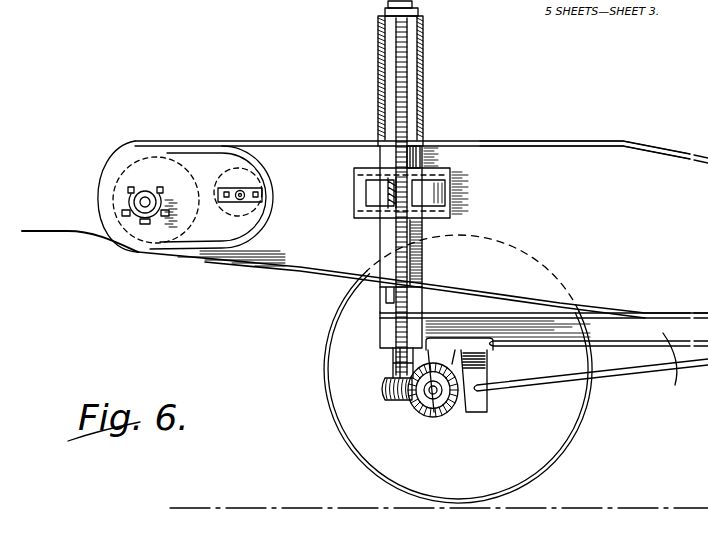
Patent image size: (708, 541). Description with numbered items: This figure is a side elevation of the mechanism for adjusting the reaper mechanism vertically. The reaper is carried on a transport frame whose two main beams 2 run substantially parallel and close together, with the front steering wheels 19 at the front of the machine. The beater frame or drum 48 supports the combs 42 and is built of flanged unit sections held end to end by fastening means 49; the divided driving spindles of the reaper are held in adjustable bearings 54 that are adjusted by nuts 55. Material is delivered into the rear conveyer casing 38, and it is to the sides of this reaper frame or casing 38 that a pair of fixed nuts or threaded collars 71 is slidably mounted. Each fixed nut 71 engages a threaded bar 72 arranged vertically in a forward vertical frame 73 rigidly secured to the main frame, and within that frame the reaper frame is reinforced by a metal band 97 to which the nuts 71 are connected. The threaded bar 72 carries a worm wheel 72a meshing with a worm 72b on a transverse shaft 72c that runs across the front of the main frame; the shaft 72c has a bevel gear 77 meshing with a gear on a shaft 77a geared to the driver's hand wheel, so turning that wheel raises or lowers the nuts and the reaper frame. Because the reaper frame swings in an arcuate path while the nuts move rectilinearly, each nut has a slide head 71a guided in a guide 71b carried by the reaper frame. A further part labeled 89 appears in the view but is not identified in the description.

The main beams 2 is at (544, 360).
The front steering wheels 19 is at (327, 338).
The rear conveyer casing 38 is at (585, 190).
The combs 42 is at (42, 233).
The beater frame or drum 48 is at (183, 187).
The fastening means 49 is at (145, 221).
The adjustable bearing 54 is at (133, 201).
The nuts 55 is at (160, 189).
The fixed nuts or threaded collars 71 is at (438, 186).
The slide head 71a is at (455, 180).
The guide 71b is at (363, 197).
The threaded bar 72 is at (406, 104).
The worm wheel 72a is at (382, 398).
The worm 72b is at (443, 412).
The transverse shaft 72c is at (420, 408).
The forward vertical frame 73 is at (418, 82).
The bevel gear 77 is at (448, 412).
The shaft 77a is at (604, 376).
The lever rod 89 is at (478, 402).
The metal band 97 is at (422, 143).